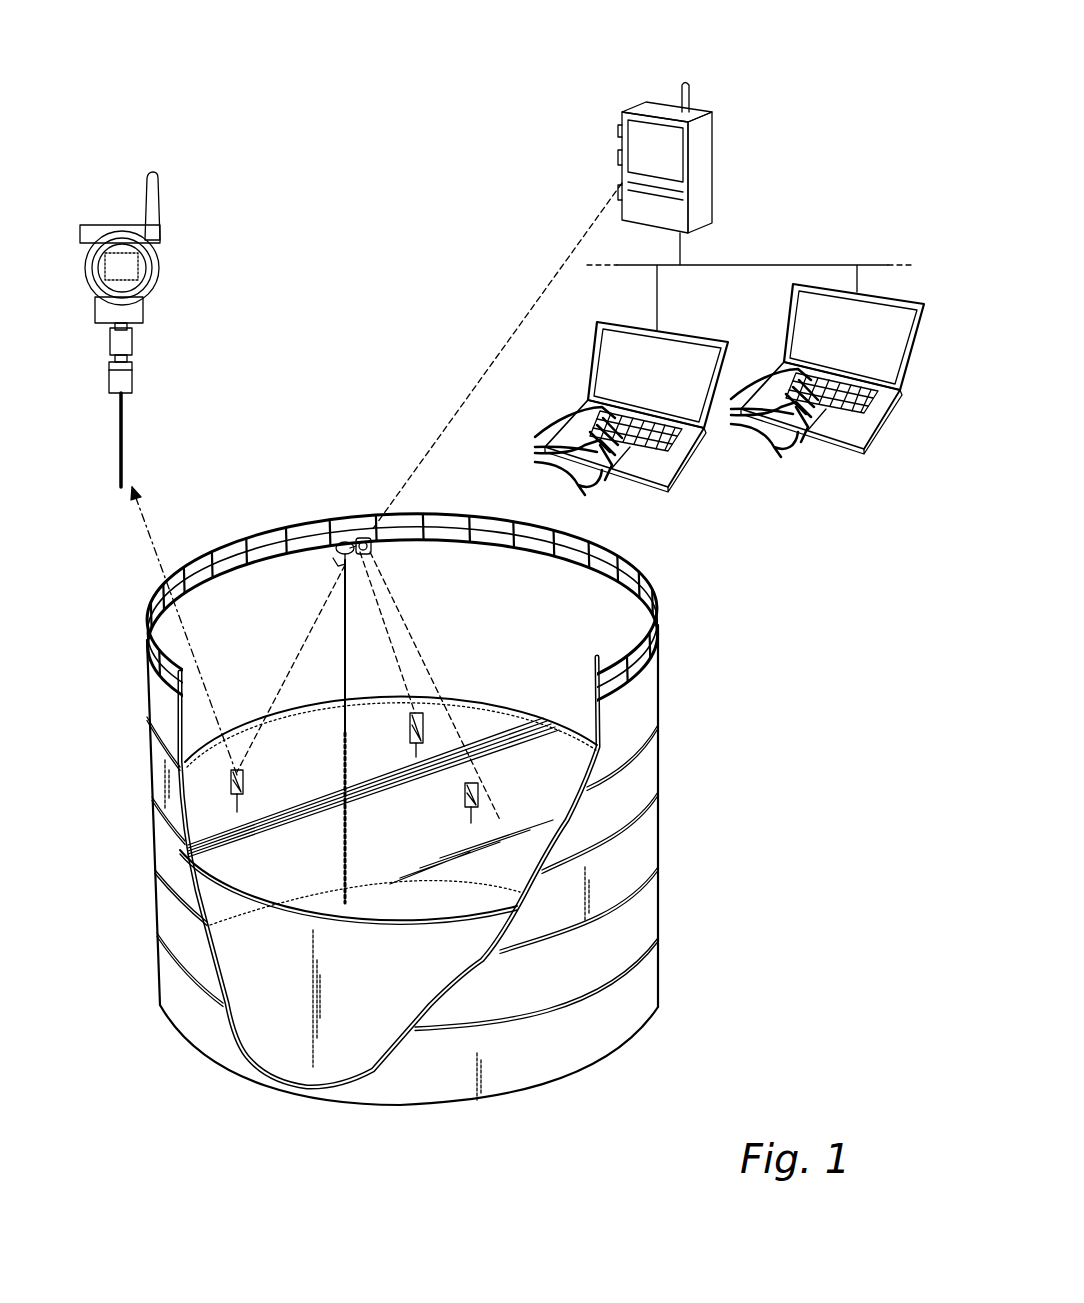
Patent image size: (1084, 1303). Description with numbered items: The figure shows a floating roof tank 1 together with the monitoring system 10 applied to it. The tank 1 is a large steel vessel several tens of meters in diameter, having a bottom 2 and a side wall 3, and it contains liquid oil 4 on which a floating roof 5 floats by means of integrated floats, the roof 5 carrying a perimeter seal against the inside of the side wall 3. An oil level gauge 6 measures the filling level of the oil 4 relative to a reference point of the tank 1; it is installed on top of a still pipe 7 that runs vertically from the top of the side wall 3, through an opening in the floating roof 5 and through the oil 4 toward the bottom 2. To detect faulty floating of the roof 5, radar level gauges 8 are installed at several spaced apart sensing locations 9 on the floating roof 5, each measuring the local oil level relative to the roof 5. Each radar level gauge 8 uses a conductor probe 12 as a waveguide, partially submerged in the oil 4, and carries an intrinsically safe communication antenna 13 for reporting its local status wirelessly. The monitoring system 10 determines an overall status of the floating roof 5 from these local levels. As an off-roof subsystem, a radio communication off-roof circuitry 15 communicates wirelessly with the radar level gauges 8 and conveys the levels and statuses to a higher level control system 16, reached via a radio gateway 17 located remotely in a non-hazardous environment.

The floating roof tank 1 is at (315, 343).
The bottom 2 is at (280, 1062).
The side wall 3 is at (660, 683).
The liquid oil 4 is at (430, 962).
The floating roof 5 is at (263, 872).
The oil level gauge 6 is at (340, 546).
The still pipe 7 is at (348, 652).
The radar level gauge 8 is at (122, 267).
The sensing location 9 is at (238, 810).
The monitoring system 10 is at (752, 110).
The probe 12 is at (125, 437).
The communication antenna 13 is at (153, 207).
The radio communication off-roof circuitry 15 is at (432, 507).
The higher level control system 16 is at (660, 472).
The radio gateway 17 is at (700, 163).